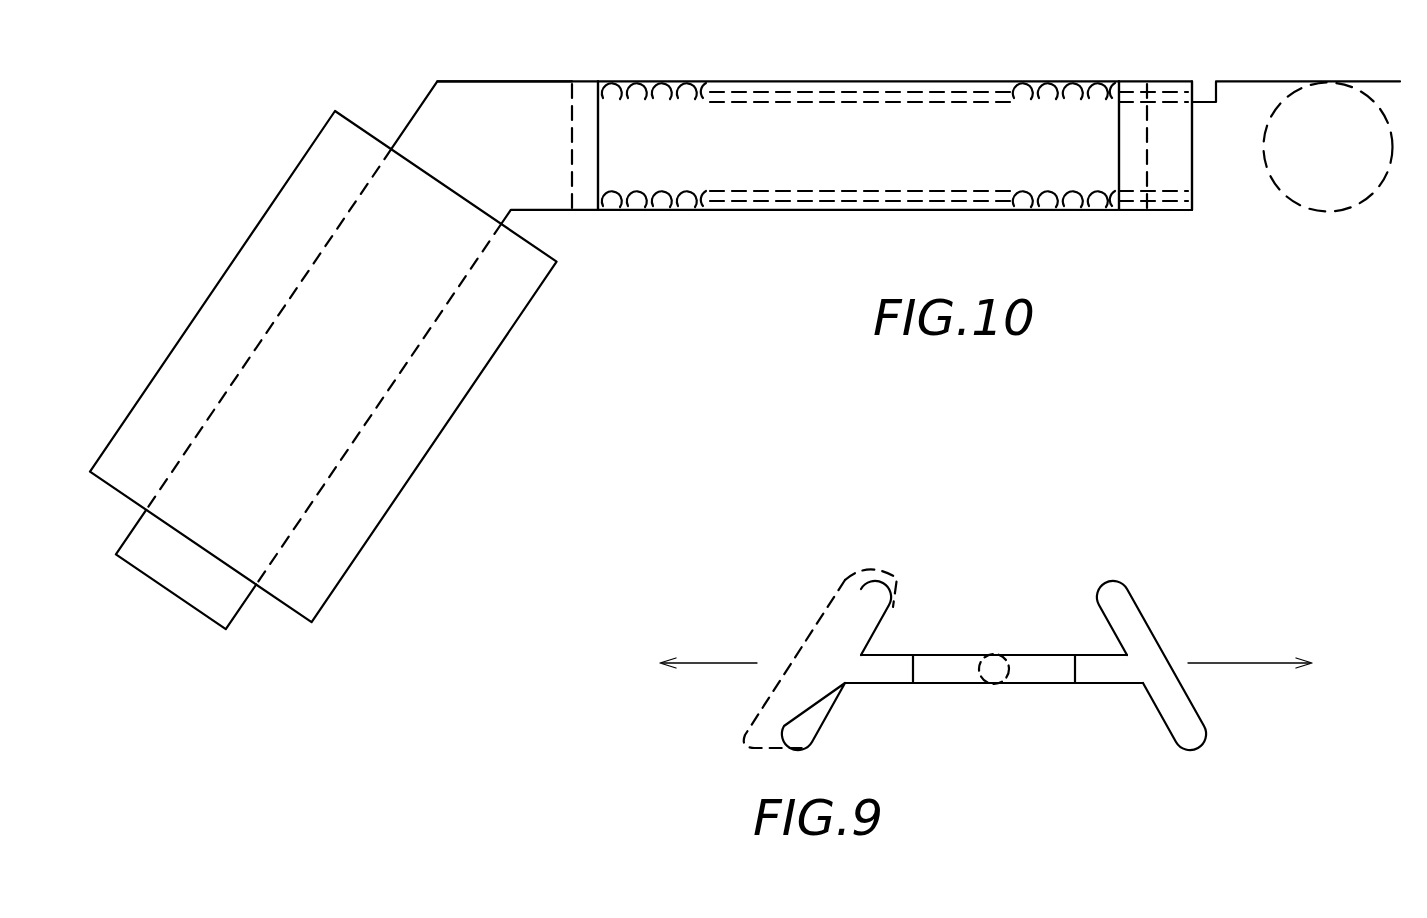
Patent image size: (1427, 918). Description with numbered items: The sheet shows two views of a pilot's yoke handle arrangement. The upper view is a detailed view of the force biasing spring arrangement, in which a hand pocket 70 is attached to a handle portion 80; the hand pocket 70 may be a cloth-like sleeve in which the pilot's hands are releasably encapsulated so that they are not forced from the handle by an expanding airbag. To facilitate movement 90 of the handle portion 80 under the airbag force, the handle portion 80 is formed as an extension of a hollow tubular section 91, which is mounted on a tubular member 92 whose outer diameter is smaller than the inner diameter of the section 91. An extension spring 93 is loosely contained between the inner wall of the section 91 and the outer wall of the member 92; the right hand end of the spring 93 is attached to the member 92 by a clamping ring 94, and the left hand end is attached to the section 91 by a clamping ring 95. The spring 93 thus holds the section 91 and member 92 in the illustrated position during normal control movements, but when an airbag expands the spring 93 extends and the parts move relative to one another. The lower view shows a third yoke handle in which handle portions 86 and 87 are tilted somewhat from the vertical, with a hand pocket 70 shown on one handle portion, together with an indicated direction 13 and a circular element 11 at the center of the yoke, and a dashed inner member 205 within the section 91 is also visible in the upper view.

In FIG. 10, the ball 11 is at (1315, 143).
In FIG. 9, the ball 11 is at (987, 684).
In FIG. 9, the direction of movement 13 is at (1212, 639).
In FIG. 10, the hand pocket 70 is at (312, 144).
In FIG. 9, the hand pocket 70 is at (841, 573).
In FIG. 10, the handle portion 80 is at (414, 116).
In FIG. 9, the handle portion 86 is at (862, 628).
In FIG. 9, the handle portion 87 is at (1128, 618).
In FIG. 10, the movement 90 is at (802, 58).
In FIG. 10, the hollow tubular section 91 is at (528, 95).
In FIG. 10, the tubular member 92 is at (907, 102).
In FIG. 10, the extension spring 93 is at (638, 205).
In FIG. 10, the clamping ring 94 is at (1147, 160).
In FIG. 10, the clamping ring 95 is at (504, 59).
In FIG. 10, the liner 205 is at (933, 192).